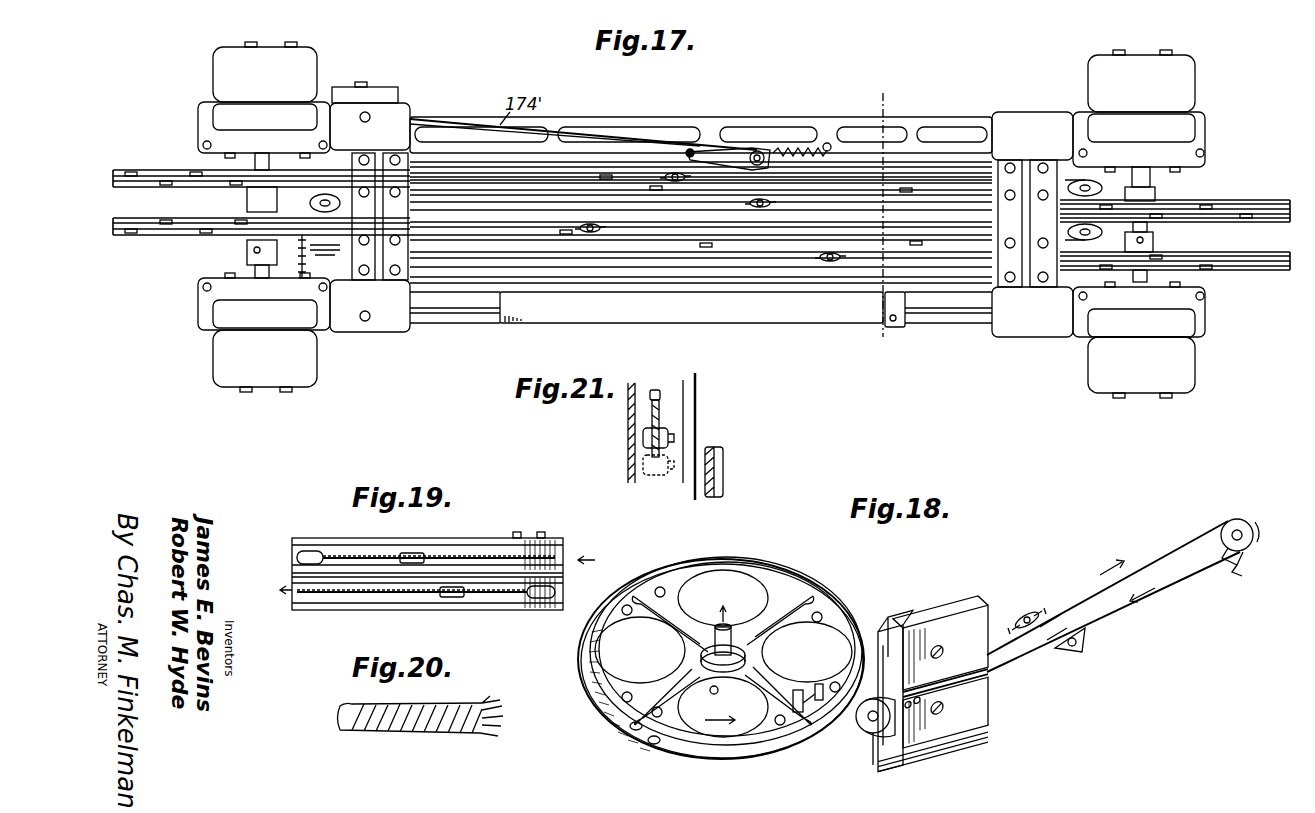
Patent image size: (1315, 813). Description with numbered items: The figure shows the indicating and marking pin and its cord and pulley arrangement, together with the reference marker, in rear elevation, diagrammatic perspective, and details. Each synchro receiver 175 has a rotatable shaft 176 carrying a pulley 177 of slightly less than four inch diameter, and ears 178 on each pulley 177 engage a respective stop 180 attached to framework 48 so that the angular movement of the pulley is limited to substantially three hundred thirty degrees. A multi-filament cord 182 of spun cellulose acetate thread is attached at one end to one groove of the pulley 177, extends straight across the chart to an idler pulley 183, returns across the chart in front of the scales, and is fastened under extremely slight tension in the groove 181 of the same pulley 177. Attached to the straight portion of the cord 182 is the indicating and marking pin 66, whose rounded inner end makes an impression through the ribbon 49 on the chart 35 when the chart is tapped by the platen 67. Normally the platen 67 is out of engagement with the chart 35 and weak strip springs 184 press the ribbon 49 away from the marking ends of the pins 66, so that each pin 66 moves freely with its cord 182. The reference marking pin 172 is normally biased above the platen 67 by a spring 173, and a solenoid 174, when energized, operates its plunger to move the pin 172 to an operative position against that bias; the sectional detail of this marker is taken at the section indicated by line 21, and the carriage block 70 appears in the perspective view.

In FIG. 17, the section line 21 is at (690, 110).
In FIG. 21, the chart 35 is at (700, 385).
In FIG. 17, the framework 48 is at (1060, 112).
In FIG. 21, the ribbon 49 is at (683, 383).
In FIG. 17, the indicating and marking pin 66 is at (682, 180).
In FIG. 18, the indicating and marking pin 66 is at (1030, 615).
In FIG. 21, the platen 67 is at (725, 460).
In FIG. 18, the carriage block 70 is at (933, 680).
In FIG. 17, the reference marking pin 172 is at (690, 150).
In FIG. 21, the reference marking pin 172 is at (670, 438).
In FIG. 17, the spring 173 is at (790, 150).
In FIG. 17, the solenoid 174 is at (405, 97).
In FIG. 17, the synchro receiver 175 is at (213, 78).
In FIG. 17, the rotatable shaft 176 is at (262, 165).
In FIG. 18, the rotatable shaft 176 is at (728, 612).
In FIG. 17, the pulley 177 is at (135, 165).
In FIG. 19, the pulley 177 is at (518, 610).
In FIG. 18, the pulley 177 is at (772, 556).
In FIG. 19, the ears 178 is at (541, 532).
In FIG. 18, the ears 178 is at (818, 684).
In FIG. 17, the stop 180 is at (1115, 182).
In FIG. 18, the peripheral groove 181 is at (660, 748).
In FIG. 19, the cord 182 is at (560, 563).
In FIG. 20, the cord 182 is at (432, 733).
In FIG. 18, the cord 182 is at (1170, 552).
In FIG. 18, the idler pulley 183 is at (870, 735).
In FIG. 17, the strip springs 184 is at (540, 195).